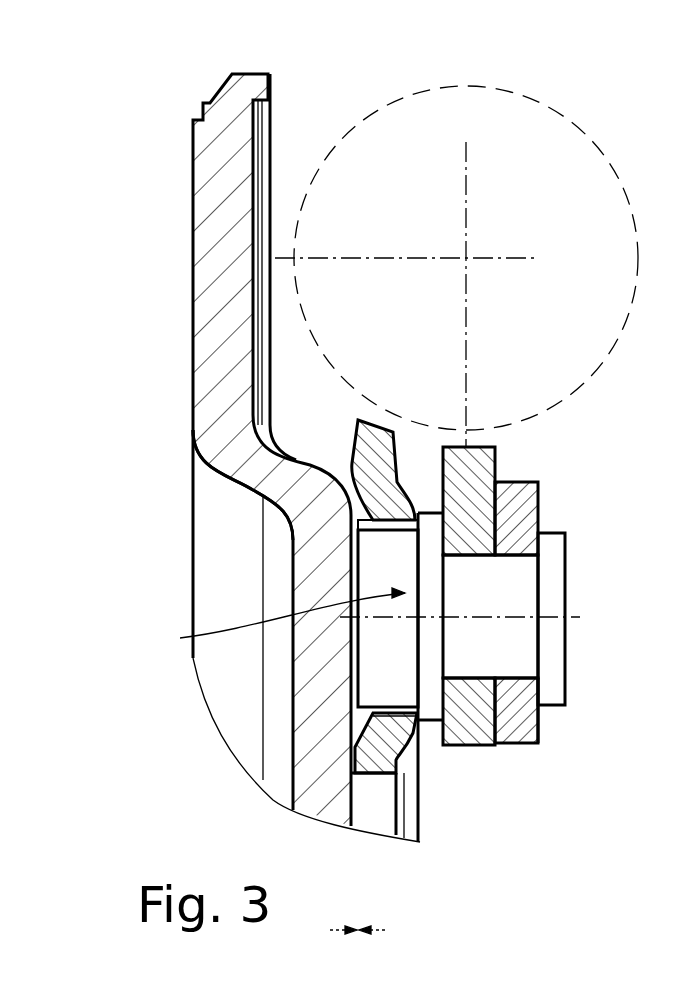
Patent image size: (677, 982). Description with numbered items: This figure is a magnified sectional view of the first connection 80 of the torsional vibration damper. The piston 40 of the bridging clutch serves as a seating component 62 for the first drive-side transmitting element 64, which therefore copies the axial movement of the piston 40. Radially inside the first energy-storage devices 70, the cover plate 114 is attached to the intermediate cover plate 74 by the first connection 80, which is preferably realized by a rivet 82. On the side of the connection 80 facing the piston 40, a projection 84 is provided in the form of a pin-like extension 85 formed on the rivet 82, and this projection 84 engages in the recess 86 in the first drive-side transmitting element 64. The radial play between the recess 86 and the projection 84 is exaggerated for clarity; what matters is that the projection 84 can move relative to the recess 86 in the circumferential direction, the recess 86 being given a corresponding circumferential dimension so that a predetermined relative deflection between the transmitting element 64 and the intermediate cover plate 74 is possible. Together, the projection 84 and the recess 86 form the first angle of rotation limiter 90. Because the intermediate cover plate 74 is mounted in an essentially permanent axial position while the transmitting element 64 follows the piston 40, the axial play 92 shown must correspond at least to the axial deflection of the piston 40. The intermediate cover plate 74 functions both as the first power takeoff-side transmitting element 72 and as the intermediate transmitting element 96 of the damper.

The piston 40 is at (228, 203).
The seating component 62 is at (225, 372).
The first energy-storage devices 70 is at (387, 113).
The first drive-side transmitting element 64 is at (373, 437).
The projection 84 is at (395, 565).
The pin-like extension 85 is at (397, 650).
The first angle of rotation limiter 90 is at (270, 622).
The recess 86 is at (400, 745).
The intermediate transmitting element 96 is at (467, 445).
The first connection 80 is at (510, 588).
The rivet 82 is at (555, 645).
The first power takeoff-side transmitting element 72 is at (463, 730).
The intermediate cover plate 74 is at (525, 722).
The cover plate 114 is at (538, 722).
The play 92 is at (358, 928).